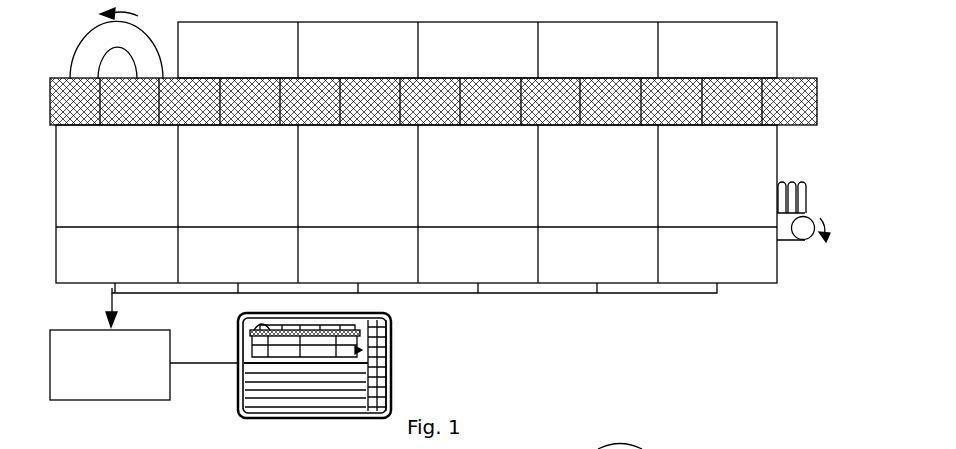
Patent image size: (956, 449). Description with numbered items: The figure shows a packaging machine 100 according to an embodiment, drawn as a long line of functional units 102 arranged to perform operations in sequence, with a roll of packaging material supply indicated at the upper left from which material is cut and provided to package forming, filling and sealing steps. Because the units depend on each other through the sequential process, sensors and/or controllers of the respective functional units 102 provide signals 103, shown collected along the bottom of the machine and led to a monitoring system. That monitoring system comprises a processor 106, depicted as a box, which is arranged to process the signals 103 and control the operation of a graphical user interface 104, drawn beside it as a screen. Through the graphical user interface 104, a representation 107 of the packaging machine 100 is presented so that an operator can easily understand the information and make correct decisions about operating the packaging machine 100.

The packaging machine 100 is at (558, 30).
The functional units 102 is at (737, 293).
The signals 103 is at (119, 311).
The graphical user interface 104 is at (389, 352).
The processor 106 is at (148, 390).
The representation of the packaging machine 107 is at (360, 338).